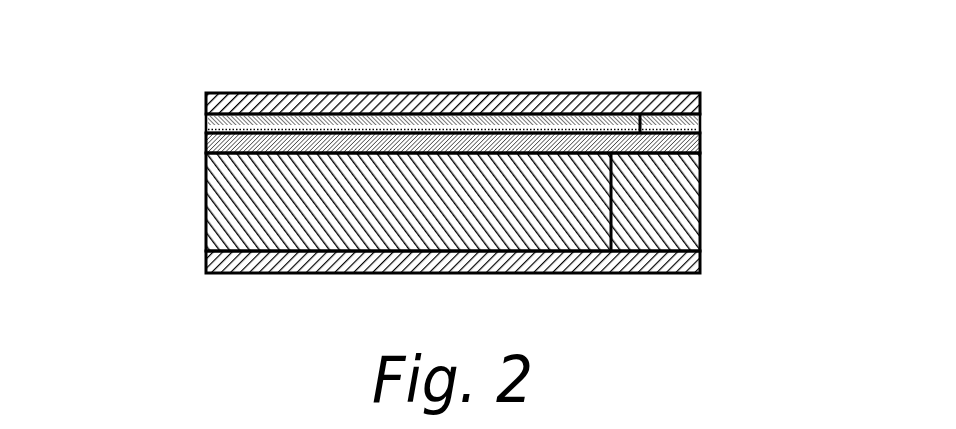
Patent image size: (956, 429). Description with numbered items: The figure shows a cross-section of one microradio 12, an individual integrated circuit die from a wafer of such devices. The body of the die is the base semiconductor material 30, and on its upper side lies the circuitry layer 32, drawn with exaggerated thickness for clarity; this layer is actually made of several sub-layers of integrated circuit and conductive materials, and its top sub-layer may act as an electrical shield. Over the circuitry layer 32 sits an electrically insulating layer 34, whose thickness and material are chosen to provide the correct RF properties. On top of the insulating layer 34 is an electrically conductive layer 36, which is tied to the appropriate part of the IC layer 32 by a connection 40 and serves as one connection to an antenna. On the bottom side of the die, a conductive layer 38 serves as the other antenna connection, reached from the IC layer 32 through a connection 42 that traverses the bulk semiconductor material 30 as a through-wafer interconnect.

The microradio 12 is at (436, 74).
The base semiconductor material 30 is at (240, 203).
The circuitry layer 32 is at (206, 140).
The electrically insulating layer 34 is at (206, 120).
The electrically conductive layer 36 is at (206, 104).
The conductive layer 38 is at (212, 262).
The connection 40 is at (644, 124).
The connection 42 is at (612, 200).